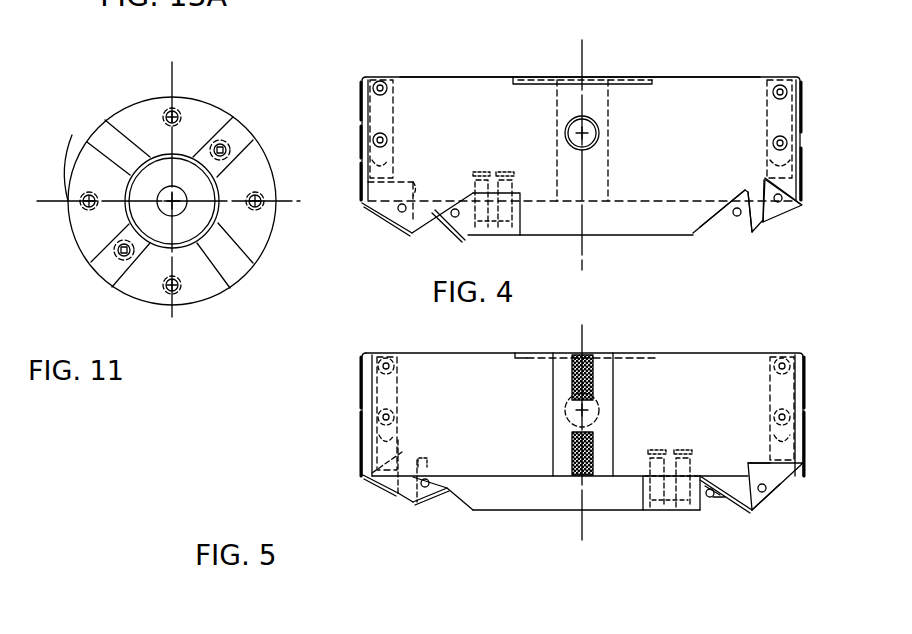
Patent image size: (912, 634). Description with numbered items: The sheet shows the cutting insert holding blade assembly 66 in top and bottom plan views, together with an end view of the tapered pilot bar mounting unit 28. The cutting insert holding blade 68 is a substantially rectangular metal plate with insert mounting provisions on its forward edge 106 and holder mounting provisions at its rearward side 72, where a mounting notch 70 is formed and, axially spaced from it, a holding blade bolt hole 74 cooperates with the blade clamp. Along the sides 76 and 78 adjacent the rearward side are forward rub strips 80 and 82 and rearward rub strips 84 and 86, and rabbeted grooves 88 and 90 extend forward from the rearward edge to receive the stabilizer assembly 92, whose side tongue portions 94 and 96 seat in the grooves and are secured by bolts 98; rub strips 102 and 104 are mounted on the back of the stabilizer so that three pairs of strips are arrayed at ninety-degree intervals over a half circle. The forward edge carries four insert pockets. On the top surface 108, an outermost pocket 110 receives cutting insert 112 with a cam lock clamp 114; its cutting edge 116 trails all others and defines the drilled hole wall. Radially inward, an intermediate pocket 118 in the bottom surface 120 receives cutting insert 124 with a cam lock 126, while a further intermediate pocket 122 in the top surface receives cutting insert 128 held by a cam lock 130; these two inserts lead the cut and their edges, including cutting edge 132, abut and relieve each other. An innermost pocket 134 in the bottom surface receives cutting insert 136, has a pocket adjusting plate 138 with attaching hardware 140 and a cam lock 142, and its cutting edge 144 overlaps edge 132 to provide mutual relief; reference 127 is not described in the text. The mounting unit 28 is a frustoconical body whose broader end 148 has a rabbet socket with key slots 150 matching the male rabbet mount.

In FIG. 11, the tapered pilot bar mounting unit 28 is at (197, 133).
In FIG. 11, the broader end 148 is at (98, 175).
In FIG. 11, the key slots 150 is at (115, 143).
In FIG. 4, the cutting insert holding blade assembly 66 is at (697, 102).
In FIG. 4, the cutting insert holding blade 68 is at (488, 108).
In FIG. 5, the cutting insert holding blade 68 is at (480, 492).
In FIG. 4, the mounting notch 70 is at (548, 78).
In FIG. 4, the rearward side 72 is at (447, 77).
In FIG. 4, the holding blade bolt hole 74 is at (590, 120).
In FIG. 4, the side 76 is at (362, 140).
In FIG. 4, the side 78 is at (802, 143).
In FIG. 4, the forward rub strip 80 is at (362, 177).
In FIG. 4, the forward rub strip 82 is at (802, 172).
In FIG. 4, the rearward rub strip 84 is at (362, 97).
In FIG. 4, the rearward rub strip 86 is at (802, 98).
In FIG. 4, the rabbeted groove 88 is at (383, 113).
In FIG. 4, the rabbeted groove 90 is at (780, 118).
In FIG. 5, the stabilizer assembly 92 is at (430, 398).
In FIG. 5, the side tongue portion 94 is at (387, 387).
In FIG. 5, the side tongue portion 96 is at (785, 387).
In FIG. 4, the bolts 98 is at (382, 145).
In FIG. 5, the rub strip 102 is at (585, 377).
In FIG. 5, the rub strip 104 is at (577, 470).
In FIG. 5, the forward edge 106 is at (533, 513).
In FIG. 4, the top surface 108 is at (653, 168).
In FIG. 4, the outermost pocket 110 is at (772, 212).
In FIG. 5, the outermost pocket 110 is at (383, 487).
In FIG. 4, the cutting insert 112 is at (772, 217).
In FIG. 4, the cam lock clamp 114 is at (778, 208).
In FIG. 4, the cutting edge 116 is at (785, 202).
In FIG. 5, the intermediate pocket 118 is at (762, 498).
In FIG. 5, the bottom surface 120 is at (632, 497).
In FIG. 4, the intermediate pocket 122 is at (728, 222).
In FIG. 5, the intermediate pocket 122 is at (420, 492).
In FIG. 5, the cutting insert 124 is at (767, 497).
In FIG. 5, the cam lock 126 is at (765, 483).
In FIG. 5, the insert top face 127 is at (770, 492).
In FIG. 4, the cutting insert 128 is at (728, 218).
In FIG. 4, the cam lock 130 is at (737, 218).
In FIG. 4, the cutting edge 132 is at (745, 232).
In FIG. 5, the innermost pocket 134 is at (710, 502).
In FIG. 5, the cutting insert 136 is at (715, 498).
In FIG. 5, the pocket adjusting plate 138 is at (670, 482).
In FIG. 5, the attaching hardware 140 is at (687, 505).
In FIG. 5, the cam lock 142 is at (718, 498).
In FIG. 5, the cutting edge 144 is at (713, 497).